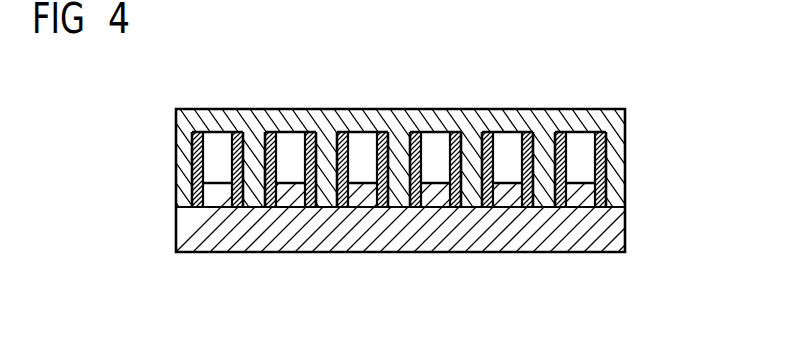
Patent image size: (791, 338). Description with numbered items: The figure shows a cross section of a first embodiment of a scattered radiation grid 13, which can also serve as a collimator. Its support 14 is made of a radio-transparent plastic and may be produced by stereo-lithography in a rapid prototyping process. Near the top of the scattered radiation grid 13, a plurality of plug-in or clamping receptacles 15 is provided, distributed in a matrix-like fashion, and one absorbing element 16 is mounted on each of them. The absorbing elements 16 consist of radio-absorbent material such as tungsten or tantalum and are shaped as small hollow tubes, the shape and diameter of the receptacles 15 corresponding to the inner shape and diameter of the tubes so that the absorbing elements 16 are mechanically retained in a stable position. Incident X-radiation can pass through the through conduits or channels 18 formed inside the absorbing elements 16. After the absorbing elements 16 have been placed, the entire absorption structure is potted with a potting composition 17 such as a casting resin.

The scattered radiation grid 13 is at (658, 121).
The support 14 is at (188, 229).
The plug-in or clamping receptacles 15 is at (510, 192).
The absorbing element 16 is at (271, 132).
The potting composition 17 is at (188, 143).
The through conduits or channels 18 is at (508, 142).